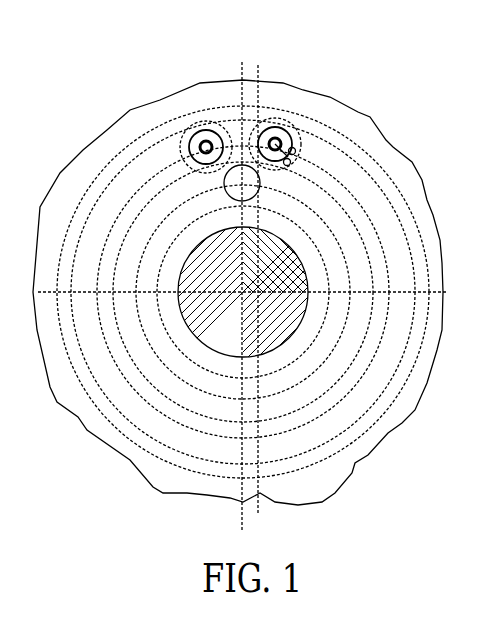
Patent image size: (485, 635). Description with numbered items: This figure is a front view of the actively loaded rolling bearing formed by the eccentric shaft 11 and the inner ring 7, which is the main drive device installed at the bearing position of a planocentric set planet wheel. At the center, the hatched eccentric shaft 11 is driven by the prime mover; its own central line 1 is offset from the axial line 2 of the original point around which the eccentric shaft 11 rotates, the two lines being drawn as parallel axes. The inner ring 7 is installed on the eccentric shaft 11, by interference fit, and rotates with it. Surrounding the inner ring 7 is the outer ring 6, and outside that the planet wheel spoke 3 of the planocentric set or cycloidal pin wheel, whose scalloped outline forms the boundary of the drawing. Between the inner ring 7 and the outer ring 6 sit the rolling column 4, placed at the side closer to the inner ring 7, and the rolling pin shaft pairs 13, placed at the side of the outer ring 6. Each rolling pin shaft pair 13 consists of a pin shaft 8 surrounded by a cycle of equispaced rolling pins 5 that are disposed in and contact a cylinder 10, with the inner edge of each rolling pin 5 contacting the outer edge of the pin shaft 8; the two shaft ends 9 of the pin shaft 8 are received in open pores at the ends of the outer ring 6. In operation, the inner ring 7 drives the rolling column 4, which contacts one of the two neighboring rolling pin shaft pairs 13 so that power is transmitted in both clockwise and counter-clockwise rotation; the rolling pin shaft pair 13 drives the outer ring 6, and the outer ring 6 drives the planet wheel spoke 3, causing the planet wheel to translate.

The central line of the eccentric shaft 1 is at (244, 64).
The axial line of the original point 2 is at (259, 66).
The planet wheel spoke 3 is at (357, 128).
The rolling column 4 is at (238, 165).
The rolling pin 5 is at (186, 134).
The outer ring 6 is at (386, 138).
The inner ring 7 is at (310, 237).
The pin shaft 8 is at (216, 132).
The shaft end 9 is at (199, 138).
The cylinder 10 is at (284, 124).
The eccentric shaft 11 is at (199, 262).
The rolling pin shaft pair 13 is at (172, 112).